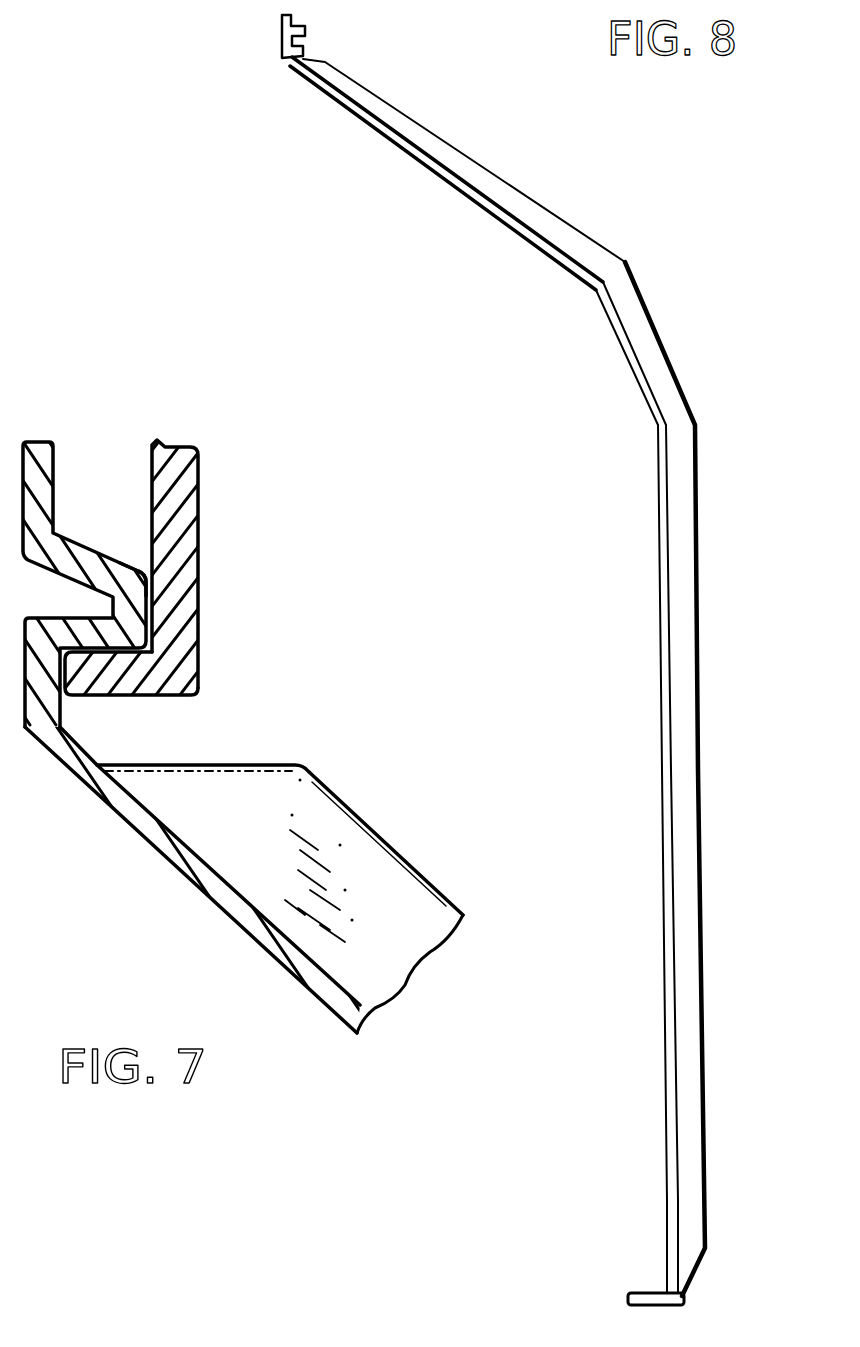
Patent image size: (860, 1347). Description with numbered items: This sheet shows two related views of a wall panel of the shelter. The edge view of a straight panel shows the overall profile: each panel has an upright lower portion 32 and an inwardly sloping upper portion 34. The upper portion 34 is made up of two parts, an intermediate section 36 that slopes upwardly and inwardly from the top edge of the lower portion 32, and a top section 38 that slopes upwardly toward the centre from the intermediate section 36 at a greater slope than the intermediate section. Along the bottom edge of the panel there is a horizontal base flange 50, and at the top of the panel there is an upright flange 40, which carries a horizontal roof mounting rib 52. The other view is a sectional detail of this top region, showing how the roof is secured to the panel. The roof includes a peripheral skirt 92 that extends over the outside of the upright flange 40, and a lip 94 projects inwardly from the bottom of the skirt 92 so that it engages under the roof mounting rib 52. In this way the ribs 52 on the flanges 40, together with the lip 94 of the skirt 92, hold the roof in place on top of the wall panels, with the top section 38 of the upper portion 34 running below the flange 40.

In FIG. 8, the lower portion 32 is at (702, 776).
In FIG. 7, the upper portion 34 is at (364, 826).
In FIG. 8, the upper portion 34 is at (571, 174).
In FIG. 8, the intermediate section 36 is at (650, 370).
In FIG. 7, the top section 38 is at (178, 866).
In FIG. 8, the top section 38 is at (444, 165).
In FIG. 7, the upright flange 40 is at (60, 444).
In FIG. 8, the upright flange 40 is at (305, 34).
In FIG. 8, the horizontal base flange 50 is at (643, 1291).
In FIG. 7, the roof mounting rib 52 is at (131, 573).
In FIG. 7, the peripheral skirt 92 is at (198, 515).
In FIG. 7, the lip 94 is at (108, 704).